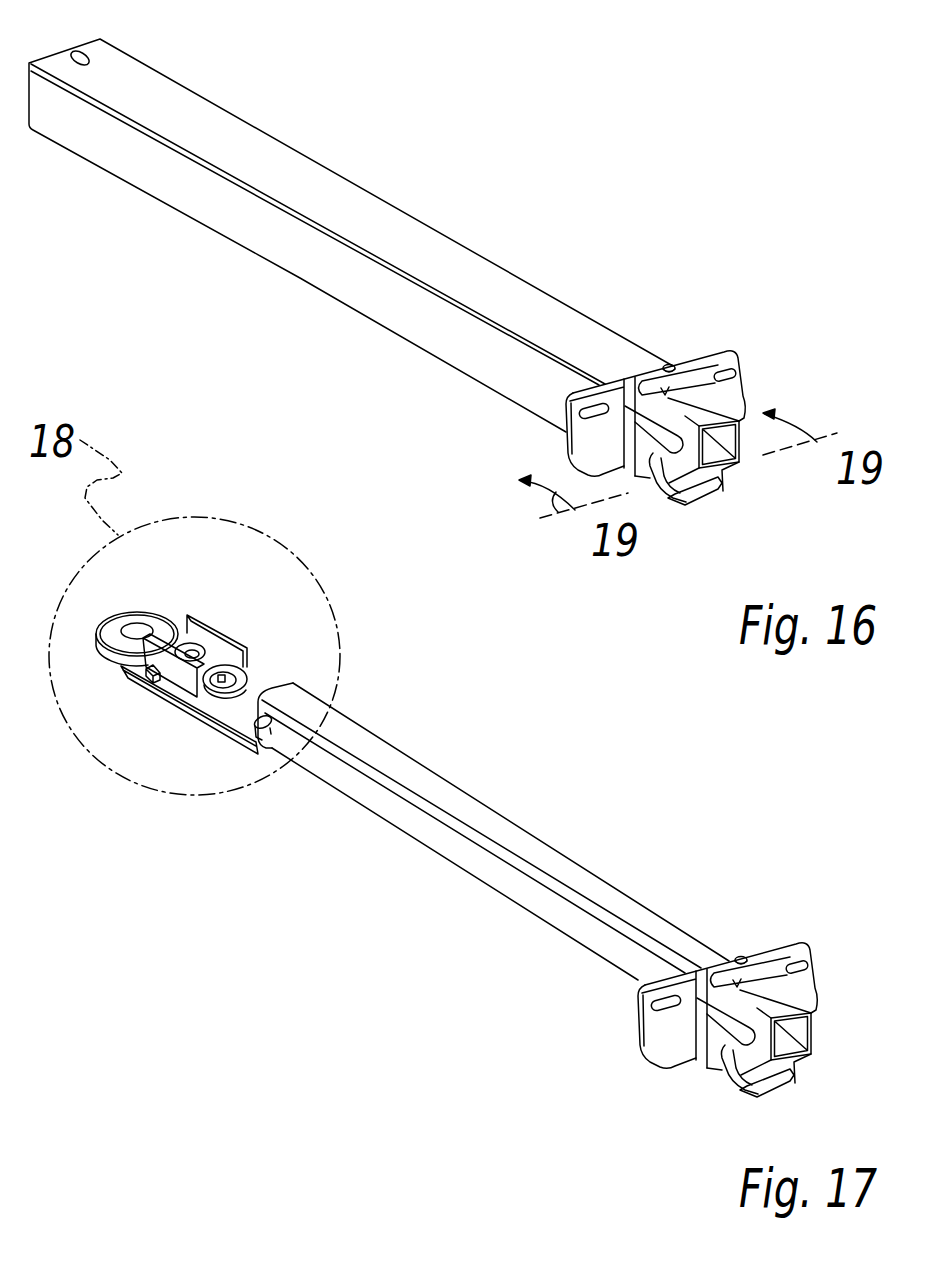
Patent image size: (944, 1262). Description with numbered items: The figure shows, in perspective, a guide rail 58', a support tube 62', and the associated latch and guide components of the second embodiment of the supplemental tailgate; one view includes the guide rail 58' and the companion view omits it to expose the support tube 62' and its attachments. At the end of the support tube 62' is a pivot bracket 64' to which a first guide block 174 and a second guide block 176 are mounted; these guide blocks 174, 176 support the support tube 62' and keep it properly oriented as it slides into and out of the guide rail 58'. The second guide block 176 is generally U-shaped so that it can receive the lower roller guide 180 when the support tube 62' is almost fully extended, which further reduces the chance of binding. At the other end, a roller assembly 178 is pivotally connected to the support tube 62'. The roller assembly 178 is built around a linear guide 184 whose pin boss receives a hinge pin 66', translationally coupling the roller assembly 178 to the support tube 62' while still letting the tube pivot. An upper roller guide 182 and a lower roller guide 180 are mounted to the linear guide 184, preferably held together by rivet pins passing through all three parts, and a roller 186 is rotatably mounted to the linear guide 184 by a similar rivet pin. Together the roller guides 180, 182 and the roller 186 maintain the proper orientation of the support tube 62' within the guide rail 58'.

In FIG. 16, the guide rail 58' is at (351, 235).
In FIG. 16, the support tube 62' is at (751, 454).
In FIG. 17, the support tube 62' is at (495, 831).
In FIG. 16, the pivot bracket 64' is at (678, 372).
In FIG. 17, the pivot bracket 64' is at (752, 964).
In FIG. 17, the hinge pin 66' is at (288, 681).
In FIG. 16, the first guide block 174 is at (695, 372).
In FIG. 17, the first guide block 174 is at (768, 960).
In FIG. 16, the second guide block 176 is at (705, 496).
In FIG. 17, the second guide block 176 is at (777, 1088).
In FIG. 17, the roller assembly 178 is at (282, 592).
In FIG. 17, the lower roller guide 180 is at (190, 711).
In FIG. 17, the upper roller guide 182 is at (233, 630).
In FIG. 17, the linear guide 184 is at (143, 678).
In FIG. 17, the roller 186 is at (121, 613).